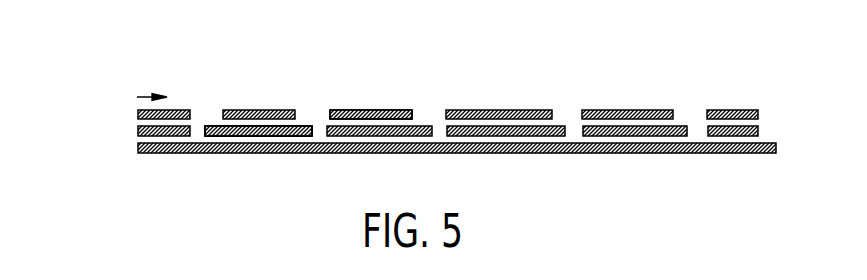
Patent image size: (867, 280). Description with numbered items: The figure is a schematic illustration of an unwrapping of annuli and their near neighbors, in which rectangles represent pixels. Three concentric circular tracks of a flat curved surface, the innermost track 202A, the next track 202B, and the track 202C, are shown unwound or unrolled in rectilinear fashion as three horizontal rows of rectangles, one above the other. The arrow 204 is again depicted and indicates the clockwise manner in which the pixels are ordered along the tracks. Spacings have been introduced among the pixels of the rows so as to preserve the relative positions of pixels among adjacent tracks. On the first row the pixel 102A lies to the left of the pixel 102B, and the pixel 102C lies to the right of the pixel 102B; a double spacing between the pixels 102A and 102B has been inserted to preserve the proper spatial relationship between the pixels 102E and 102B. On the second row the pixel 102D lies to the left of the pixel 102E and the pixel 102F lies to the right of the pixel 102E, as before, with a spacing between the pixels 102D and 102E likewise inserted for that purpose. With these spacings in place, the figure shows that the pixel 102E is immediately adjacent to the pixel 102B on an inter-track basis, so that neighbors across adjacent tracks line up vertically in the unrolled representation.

The pixel 102A is at (280, 110).
The pixel 102B is at (337, 110).
The pixel 102C is at (357, 110).
The pixel 102D is at (273, 136).
The pixel 102E is at (282, 137).
The pixel 102F is at (308, 137).
The innermost circular track 202A is at (402, 76).
The circular track 202B is at (402, 165).
The circular track 202C is at (118, 147).
The arrow 204 is at (148, 96).